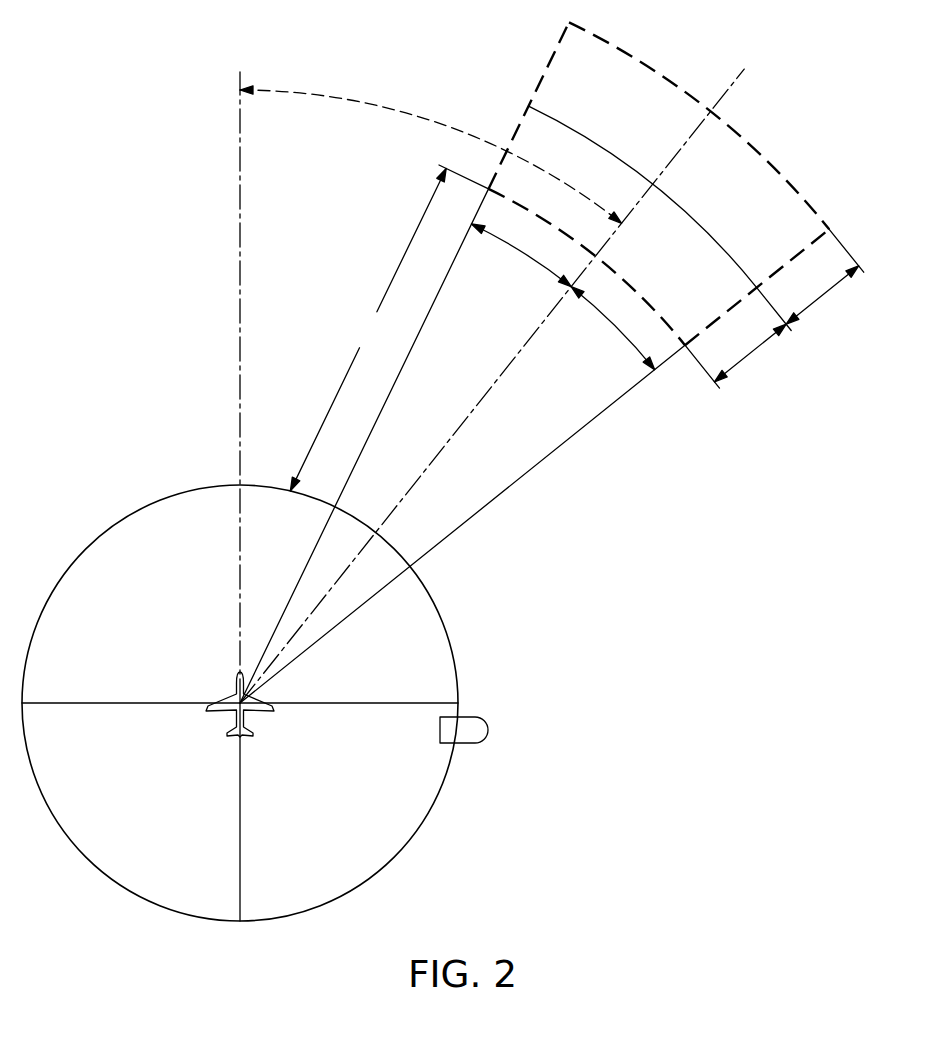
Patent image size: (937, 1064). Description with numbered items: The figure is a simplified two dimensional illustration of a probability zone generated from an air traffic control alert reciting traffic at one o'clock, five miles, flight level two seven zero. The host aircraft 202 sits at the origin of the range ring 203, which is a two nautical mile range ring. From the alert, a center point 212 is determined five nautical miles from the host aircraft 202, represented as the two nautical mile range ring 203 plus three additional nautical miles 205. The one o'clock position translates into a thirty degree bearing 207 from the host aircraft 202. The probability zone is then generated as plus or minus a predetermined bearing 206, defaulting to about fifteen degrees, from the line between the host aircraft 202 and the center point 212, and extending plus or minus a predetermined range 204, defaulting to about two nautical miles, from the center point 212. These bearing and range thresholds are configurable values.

The host aircraft 202 is at (250, 733).
The range ring 203 is at (450, 775).
The predetermined range 204 is at (774, 308).
The three additional nautical miles 205 is at (389, 328).
The predetermined bearing 206 is at (520, 257).
The thirty degree bearing 207 is at (335, 100).
The center point 212 is at (653, 184).